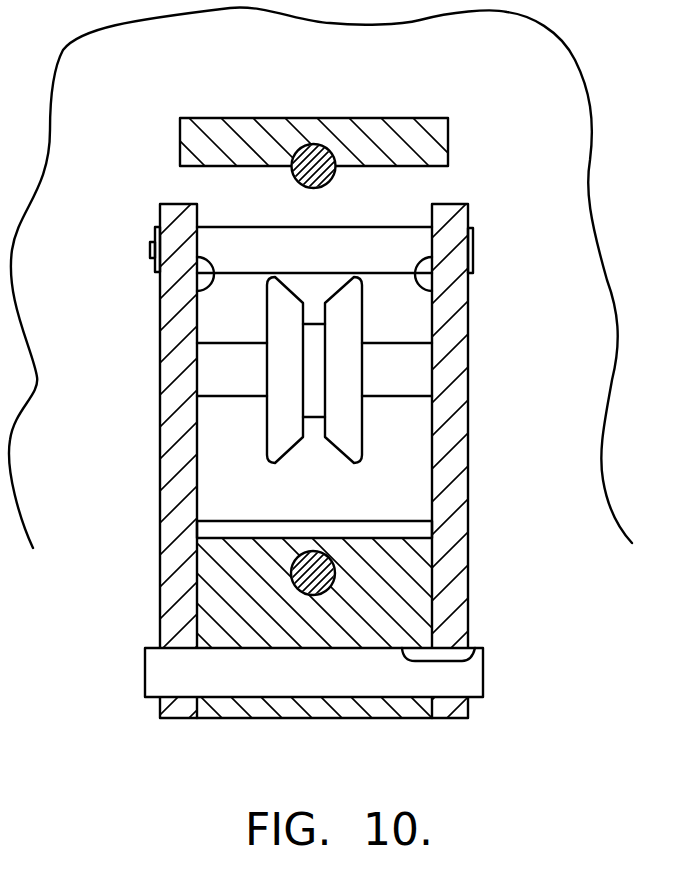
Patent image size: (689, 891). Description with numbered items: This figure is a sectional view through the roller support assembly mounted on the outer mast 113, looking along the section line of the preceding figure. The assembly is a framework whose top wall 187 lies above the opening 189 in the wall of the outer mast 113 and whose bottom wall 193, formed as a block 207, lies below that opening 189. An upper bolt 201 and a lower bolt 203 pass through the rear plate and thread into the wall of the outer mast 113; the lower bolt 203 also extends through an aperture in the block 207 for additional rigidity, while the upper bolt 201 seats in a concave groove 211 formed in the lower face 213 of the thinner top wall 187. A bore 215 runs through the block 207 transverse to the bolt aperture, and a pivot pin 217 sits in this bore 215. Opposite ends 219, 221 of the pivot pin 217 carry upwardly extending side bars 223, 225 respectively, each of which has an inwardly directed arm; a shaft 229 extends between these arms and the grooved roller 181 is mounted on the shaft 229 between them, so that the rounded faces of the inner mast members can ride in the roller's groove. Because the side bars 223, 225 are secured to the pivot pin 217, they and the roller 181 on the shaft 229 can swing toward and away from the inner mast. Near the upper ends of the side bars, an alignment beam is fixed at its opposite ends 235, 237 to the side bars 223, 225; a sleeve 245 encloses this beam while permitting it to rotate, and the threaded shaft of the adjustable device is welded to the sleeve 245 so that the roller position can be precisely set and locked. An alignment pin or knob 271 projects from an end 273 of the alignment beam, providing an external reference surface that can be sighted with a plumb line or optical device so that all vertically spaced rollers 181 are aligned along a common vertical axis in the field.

The outer mast 113 is at (552, 107).
The roller 181 is at (278, 440).
The top wall 187 is at (218, 118).
The opening 189 is at (410, 417).
The bottom wall 193 is at (217, 593).
The upper bolt 201 is at (331, 150).
The lower bolt 203 is at (333, 556).
The block 207 is at (262, 538).
The concave groove 211 is at (319, 147).
The lower face 213 is at (252, 167).
The bore 215 is at (473, 648).
The pivot pin 217 is at (353, 682).
The end of pivot pin 219 is at (145, 672).
The end of pivot pin 221 is at (483, 673).
The side bar 223 is at (170, 453).
The side bar 225 is at (460, 355).
The shaft 229 is at (215, 357).
The end of alignment beam 235 is at (210, 285).
The end of alignment beam 237 is at (430, 289).
The sleeve 245 is at (327, 247).
The alignment pin 271 is at (150, 252).
The end of alignment beam 273 is at (157, 230).